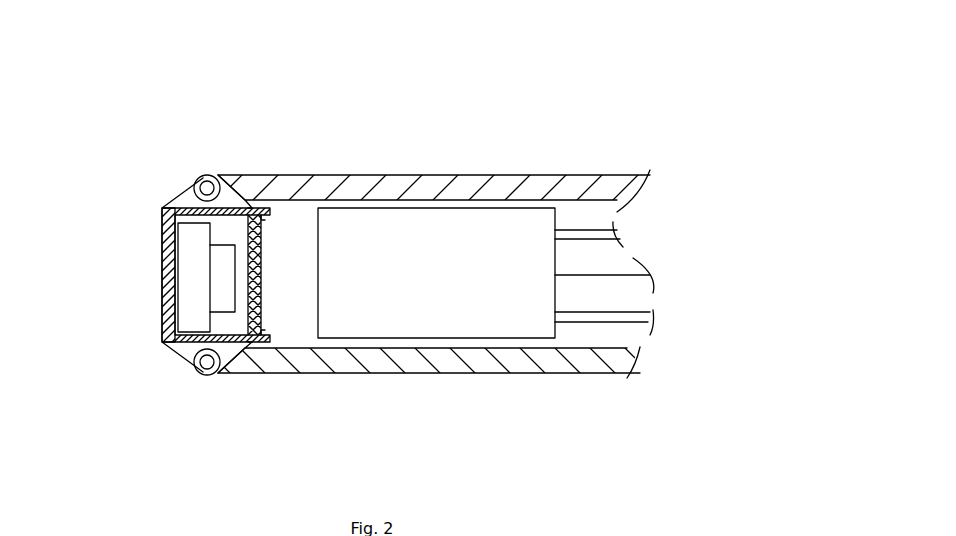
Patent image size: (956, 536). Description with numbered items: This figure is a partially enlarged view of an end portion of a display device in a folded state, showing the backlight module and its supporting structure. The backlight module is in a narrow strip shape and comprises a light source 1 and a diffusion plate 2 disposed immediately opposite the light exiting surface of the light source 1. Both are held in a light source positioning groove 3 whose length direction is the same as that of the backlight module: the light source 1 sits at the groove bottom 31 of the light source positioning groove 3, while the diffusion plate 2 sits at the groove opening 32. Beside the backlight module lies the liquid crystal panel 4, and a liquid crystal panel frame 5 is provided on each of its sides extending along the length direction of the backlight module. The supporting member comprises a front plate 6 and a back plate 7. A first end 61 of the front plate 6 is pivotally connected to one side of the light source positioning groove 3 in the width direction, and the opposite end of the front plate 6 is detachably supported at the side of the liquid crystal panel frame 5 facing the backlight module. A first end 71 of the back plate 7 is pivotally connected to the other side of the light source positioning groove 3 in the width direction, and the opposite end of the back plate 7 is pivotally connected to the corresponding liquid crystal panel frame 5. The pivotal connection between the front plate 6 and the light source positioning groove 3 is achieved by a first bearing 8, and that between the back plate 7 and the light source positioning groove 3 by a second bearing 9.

The light source 1 is at (221, 277).
The diffusion plate 2 is at (262, 277).
The light source positioning groove 3 is at (162, 280).
The groove bottom 31 is at (172, 262).
The groove opening 32 is at (265, 220).
The liquid crystal panel 4 is at (597, 290).
The liquid crystal panel frame 5 is at (417, 295).
The front plate 6 is at (318, 373).
The first end of the front plate 61 is at (241, 380).
The back plate 7 is at (420, 190).
The first end of the back plate 71 is at (232, 166).
The first bearing 8 is at (207, 365).
The second bearing 9 is at (205, 178).